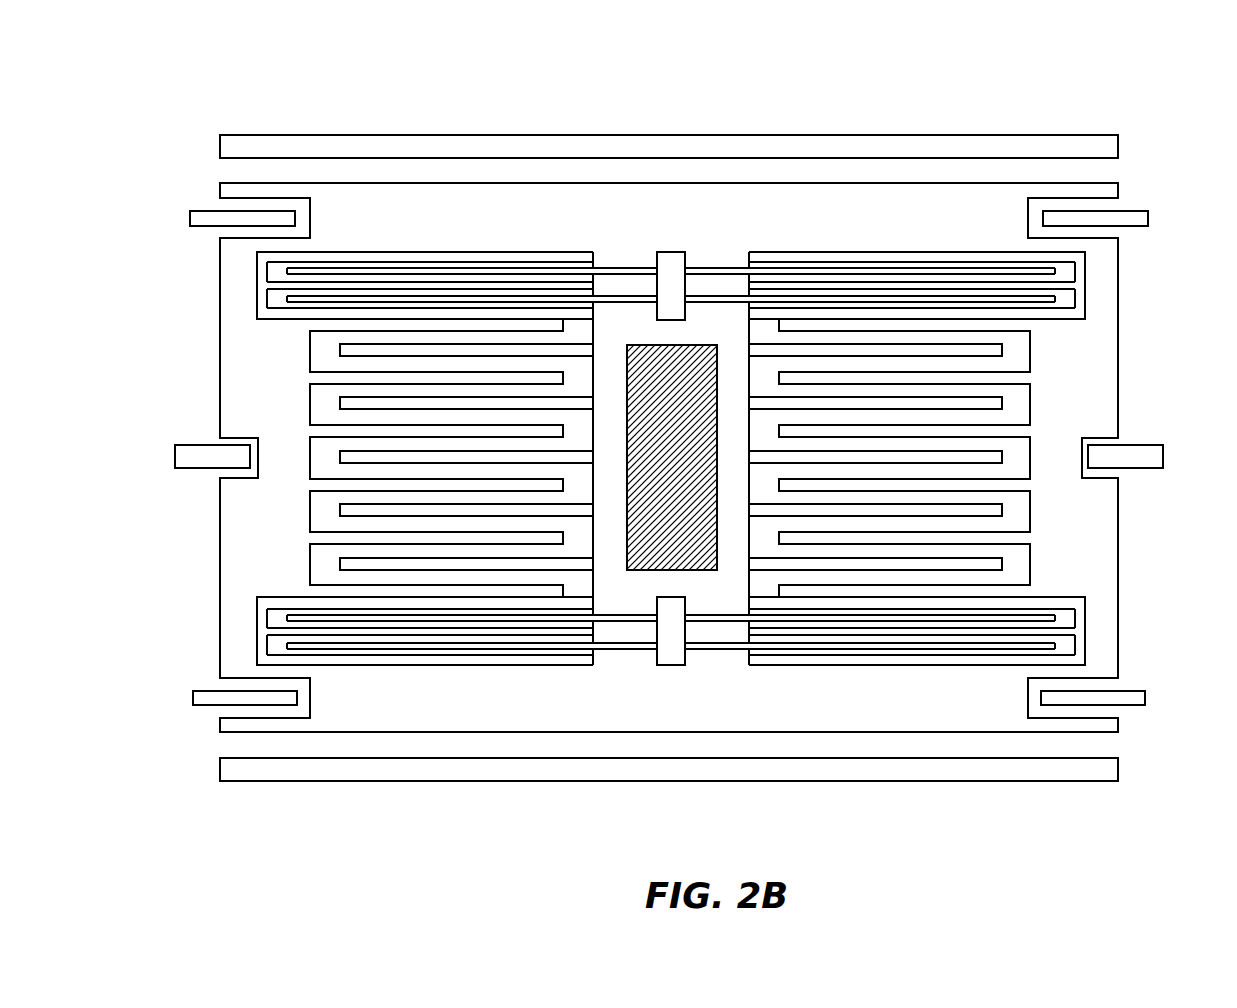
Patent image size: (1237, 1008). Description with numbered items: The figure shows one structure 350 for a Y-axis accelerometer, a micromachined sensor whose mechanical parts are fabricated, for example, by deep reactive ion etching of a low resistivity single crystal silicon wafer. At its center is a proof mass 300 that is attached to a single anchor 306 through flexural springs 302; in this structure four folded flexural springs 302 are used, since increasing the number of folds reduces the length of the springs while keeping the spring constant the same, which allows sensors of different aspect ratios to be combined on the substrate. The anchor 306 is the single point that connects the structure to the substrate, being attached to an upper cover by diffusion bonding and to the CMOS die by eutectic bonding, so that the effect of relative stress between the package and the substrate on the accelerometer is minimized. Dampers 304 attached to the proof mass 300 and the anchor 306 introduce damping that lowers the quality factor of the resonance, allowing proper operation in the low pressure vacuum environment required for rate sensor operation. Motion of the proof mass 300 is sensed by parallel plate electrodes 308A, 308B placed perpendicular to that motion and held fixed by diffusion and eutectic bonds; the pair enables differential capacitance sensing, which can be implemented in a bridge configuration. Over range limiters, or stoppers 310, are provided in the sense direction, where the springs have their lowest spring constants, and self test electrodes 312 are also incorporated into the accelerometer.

The proof mass 300 is at (645, 707).
The flexural springs 302 is at (388, 270).
The dampers 304 is at (838, 437).
The anchor 306 is at (650, 367).
The parallel plate electrode 308A is at (930, 137).
The parallel plate electrode 308B is at (942, 783).
The over range limiter (stopper) 310 is at (1125, 470).
The self test electrode 312 is at (272, 707).
The structure for a Y-axis accelerometer 350 is at (1123, 112).